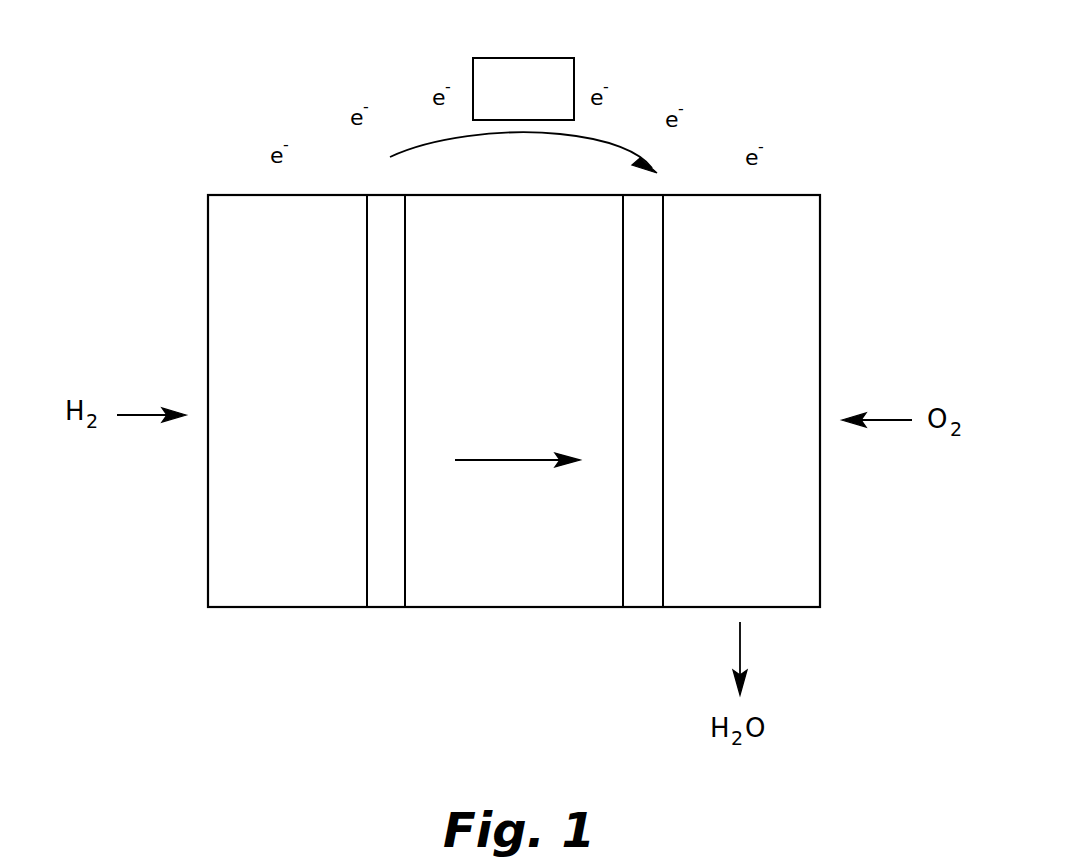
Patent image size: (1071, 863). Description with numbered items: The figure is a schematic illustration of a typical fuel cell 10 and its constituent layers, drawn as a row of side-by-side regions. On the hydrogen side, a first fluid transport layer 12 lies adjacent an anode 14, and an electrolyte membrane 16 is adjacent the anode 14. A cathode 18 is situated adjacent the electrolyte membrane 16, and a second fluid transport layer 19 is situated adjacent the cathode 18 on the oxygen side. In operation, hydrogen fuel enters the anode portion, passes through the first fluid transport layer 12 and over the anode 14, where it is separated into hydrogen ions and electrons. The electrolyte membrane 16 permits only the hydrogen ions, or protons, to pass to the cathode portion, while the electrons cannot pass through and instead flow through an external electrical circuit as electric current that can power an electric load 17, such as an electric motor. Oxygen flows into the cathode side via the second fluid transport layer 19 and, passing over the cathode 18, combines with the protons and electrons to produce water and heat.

The fuel cell 10 is at (862, 90).
The first fluid transport layer 12 is at (290, 589).
The anode 14 is at (383, 608).
The electrolyte membrane 16 is at (530, 590).
The electric load 17 is at (538, 58).
The cathode 18 is at (643, 608).
The second fluid transport layer 19 is at (760, 592).